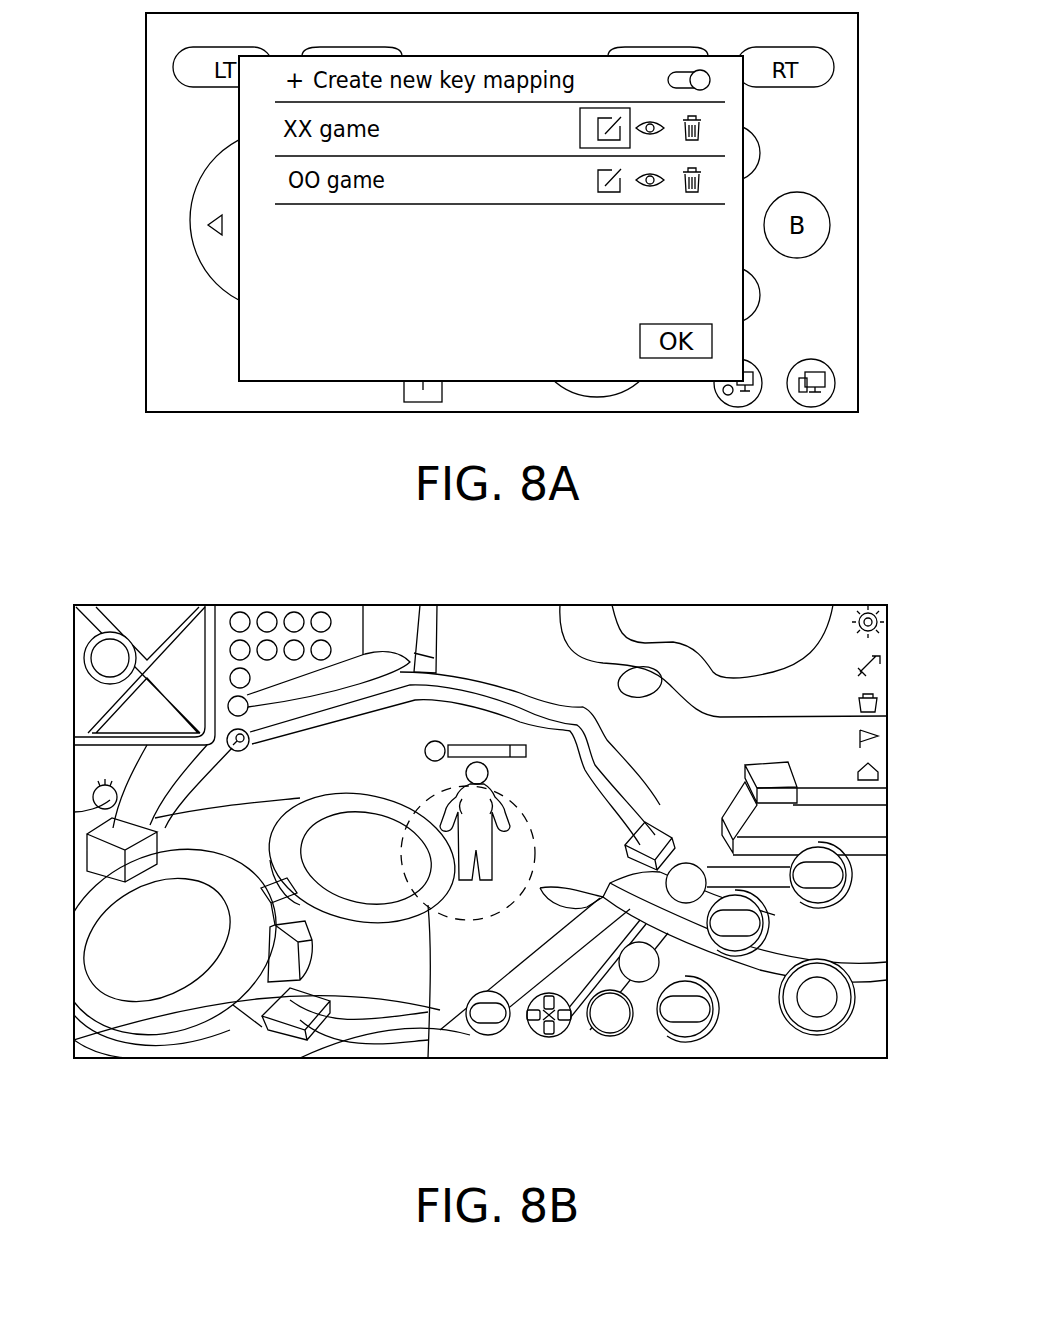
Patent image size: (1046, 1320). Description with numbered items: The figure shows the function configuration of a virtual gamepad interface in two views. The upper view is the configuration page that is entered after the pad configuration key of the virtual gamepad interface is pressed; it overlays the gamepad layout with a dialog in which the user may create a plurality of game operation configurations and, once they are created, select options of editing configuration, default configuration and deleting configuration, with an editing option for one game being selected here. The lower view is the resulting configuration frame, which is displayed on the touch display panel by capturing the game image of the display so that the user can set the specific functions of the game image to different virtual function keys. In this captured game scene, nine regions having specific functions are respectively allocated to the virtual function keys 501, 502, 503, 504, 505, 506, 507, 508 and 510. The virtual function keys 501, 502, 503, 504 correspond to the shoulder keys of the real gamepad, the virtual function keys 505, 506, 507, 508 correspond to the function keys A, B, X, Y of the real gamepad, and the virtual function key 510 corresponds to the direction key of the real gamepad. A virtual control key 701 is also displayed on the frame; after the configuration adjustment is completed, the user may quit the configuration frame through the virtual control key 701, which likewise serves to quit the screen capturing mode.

The virtual control key 701 is at (112, 655).
The virtual function key 501 is at (489, 1036).
The virtual function key 502 is at (720, 1012).
The virtual function key 503 is at (766, 925).
The virtual function key 504 is at (851, 872).
The virtual function key 505 is at (858, 990).
The virtual function key 506 is at (610, 1036).
The virtual function key 507 is at (639, 983).
The virtual function key 508 is at (690, 862).
The virtual function key 510 is at (548, 1038).